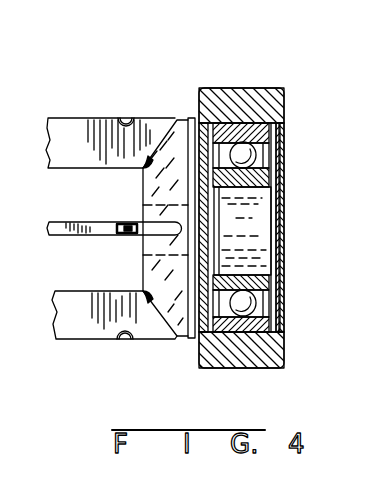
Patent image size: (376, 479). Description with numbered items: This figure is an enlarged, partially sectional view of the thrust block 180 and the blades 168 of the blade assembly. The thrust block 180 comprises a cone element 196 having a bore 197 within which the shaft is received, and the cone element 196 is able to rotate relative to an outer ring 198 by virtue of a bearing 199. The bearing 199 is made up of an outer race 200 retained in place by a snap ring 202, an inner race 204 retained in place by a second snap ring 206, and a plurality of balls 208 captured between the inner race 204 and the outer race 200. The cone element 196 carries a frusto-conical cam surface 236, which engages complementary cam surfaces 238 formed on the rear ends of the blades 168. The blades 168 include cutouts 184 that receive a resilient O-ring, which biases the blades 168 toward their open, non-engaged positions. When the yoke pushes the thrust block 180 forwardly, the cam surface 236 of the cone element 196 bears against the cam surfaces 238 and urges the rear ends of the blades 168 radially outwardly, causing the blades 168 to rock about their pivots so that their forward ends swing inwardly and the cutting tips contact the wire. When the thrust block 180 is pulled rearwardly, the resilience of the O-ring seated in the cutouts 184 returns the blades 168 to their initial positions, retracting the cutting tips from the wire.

The blades 168 is at (70, 122).
The thrust block 180 is at (235, 191).
The cutouts 184 is at (127, 126).
The cone element 196 is at (192, 340).
The bore 197 is at (258, 205).
The outer ring 198 is at (242, 88).
The bearing 199 is at (263, 118).
The outer race 200 is at (285, 161).
The snap ring 202 is at (284, 136).
The inner race 204 is at (270, 178).
The snap ring 206 is at (278, 281).
The balls 208 is at (257, 304).
The frusto-conical cam surface 236 is at (158, 318).
The cam surfaces 238 is at (147, 176).